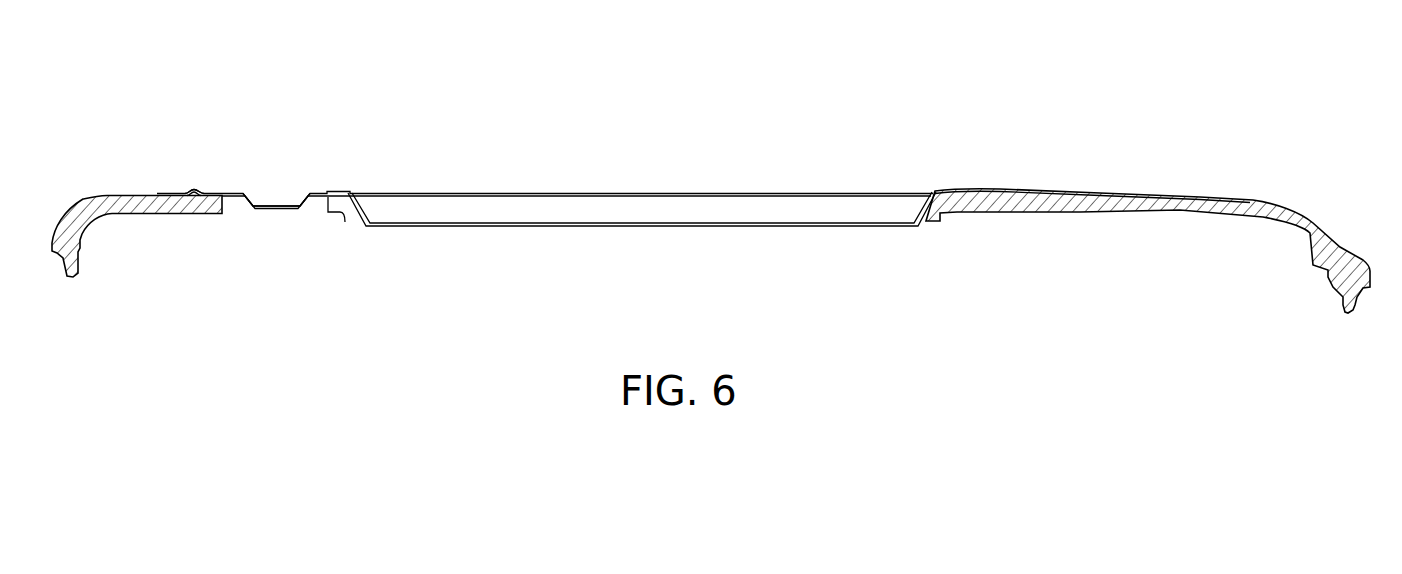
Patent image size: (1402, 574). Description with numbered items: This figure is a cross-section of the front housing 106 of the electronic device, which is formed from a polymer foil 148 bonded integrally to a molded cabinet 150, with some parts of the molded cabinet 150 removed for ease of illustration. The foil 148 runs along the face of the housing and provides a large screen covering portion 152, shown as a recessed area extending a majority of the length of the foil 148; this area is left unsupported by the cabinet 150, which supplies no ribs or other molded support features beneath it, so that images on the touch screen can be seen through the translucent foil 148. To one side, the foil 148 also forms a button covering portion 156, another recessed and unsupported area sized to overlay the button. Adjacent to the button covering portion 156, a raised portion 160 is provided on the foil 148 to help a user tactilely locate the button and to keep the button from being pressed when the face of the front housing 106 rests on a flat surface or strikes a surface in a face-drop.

The front housing 106 is at (82, 194).
The polymer foil 148 is at (557, 230).
The molded cabinet 150 is at (130, 215).
The screen covering portion 152 is at (923, 167).
The button covering portion 156 is at (317, 167).
The raised portion 160 is at (193, 189).